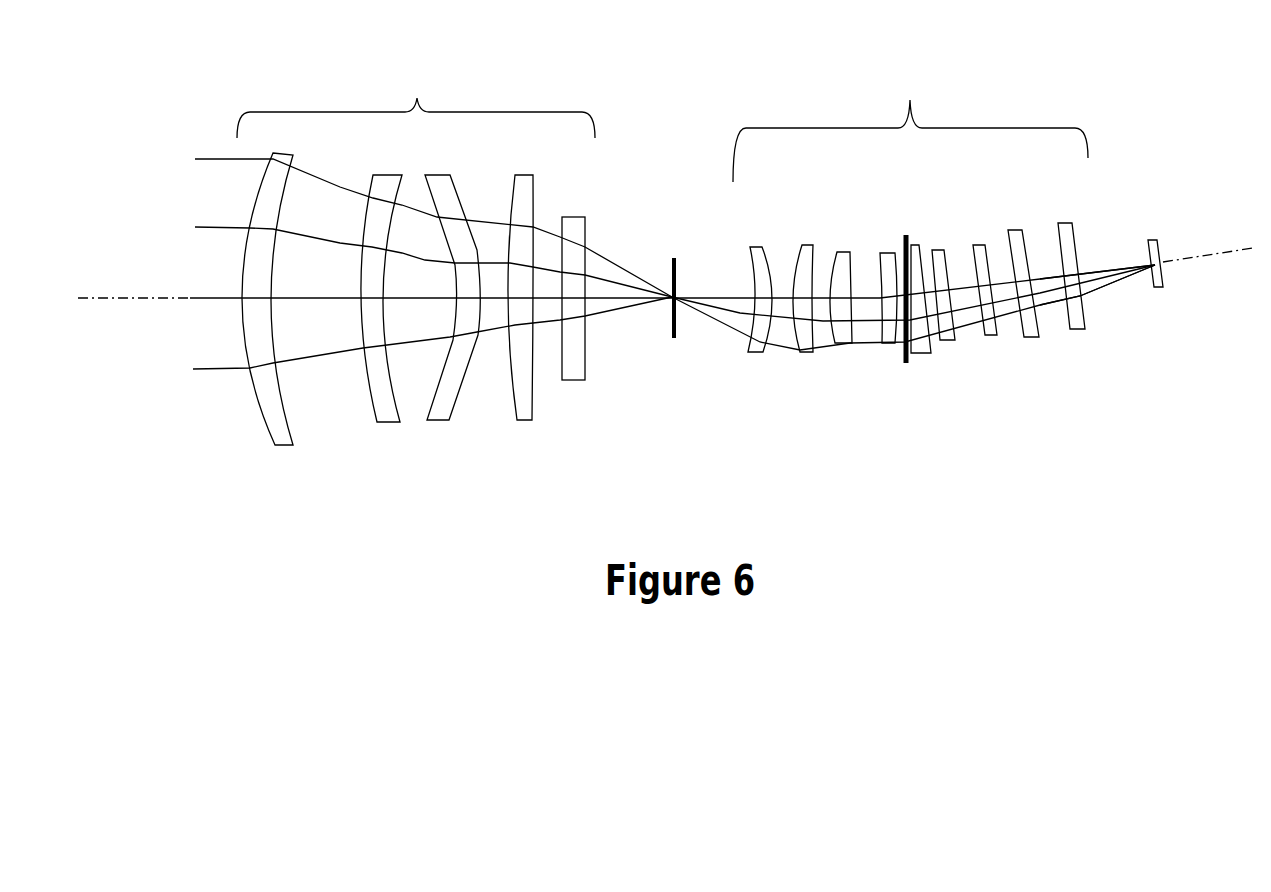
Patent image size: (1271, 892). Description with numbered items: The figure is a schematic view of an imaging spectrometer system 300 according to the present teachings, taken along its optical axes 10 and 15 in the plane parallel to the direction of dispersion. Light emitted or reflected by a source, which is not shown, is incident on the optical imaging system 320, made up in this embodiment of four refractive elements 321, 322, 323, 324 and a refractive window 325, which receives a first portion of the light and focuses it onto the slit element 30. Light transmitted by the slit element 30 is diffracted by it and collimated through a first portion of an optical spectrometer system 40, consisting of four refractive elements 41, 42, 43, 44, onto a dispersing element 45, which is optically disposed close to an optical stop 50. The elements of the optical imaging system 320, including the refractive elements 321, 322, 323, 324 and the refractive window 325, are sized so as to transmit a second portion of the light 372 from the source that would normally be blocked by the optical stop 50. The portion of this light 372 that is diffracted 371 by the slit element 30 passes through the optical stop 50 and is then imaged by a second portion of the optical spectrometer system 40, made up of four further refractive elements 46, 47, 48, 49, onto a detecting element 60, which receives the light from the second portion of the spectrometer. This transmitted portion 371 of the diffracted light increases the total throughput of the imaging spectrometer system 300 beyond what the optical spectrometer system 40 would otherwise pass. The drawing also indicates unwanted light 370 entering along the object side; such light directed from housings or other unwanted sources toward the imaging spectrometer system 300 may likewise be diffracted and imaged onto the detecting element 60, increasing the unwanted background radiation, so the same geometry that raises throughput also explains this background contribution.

The imaging spectrometer system 300 is at (158, 102).
The optical imaging system 320 is at (416, 94).
The optical spectrometer system 40 is at (910, 126).
The optical axis 10 is at (118, 301).
The optical axis 15 is at (1212, 258).
The slit element 30 is at (660, 274).
The optical stop 50 is at (905, 363).
The detecting element 60 is at (1160, 250).
The unwanted light 370 is at (207, 190).
The transmitted portion of diffracted light 371 is at (1098, 282).
The second portion of the light 372 is at (728, 317).
The refractive element 321 is at (285, 447).
The refractive element 322 is at (388, 425).
The refractive element 323 is at (438, 425).
The refractive element 324 is at (523, 423).
The refractive window 325 is at (570, 382).
The refractive element 41 is at (752, 245).
The refractive element 42 is at (805, 243).
The refractive element 43 is at (840, 252).
The refractive element 44 is at (885, 250).
The dispersing element 45 is at (915, 355).
The refractive element 46 is at (935, 250).
The refractive element 47 is at (975, 245).
The refractive element 48 is at (1010, 230).
The refractive element 49 is at (1065, 223).